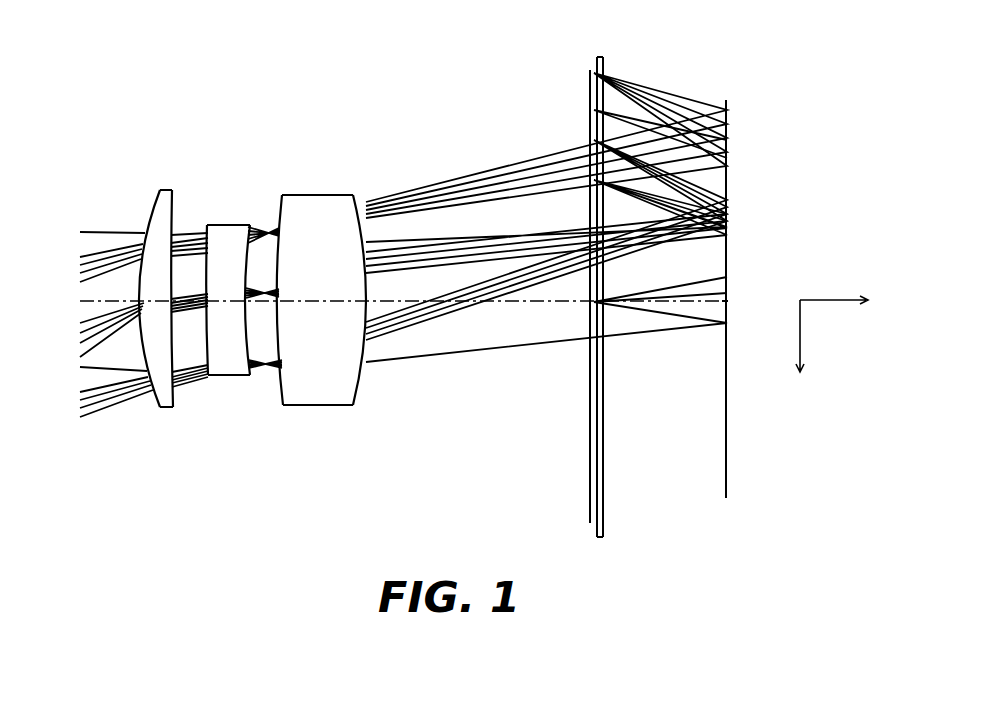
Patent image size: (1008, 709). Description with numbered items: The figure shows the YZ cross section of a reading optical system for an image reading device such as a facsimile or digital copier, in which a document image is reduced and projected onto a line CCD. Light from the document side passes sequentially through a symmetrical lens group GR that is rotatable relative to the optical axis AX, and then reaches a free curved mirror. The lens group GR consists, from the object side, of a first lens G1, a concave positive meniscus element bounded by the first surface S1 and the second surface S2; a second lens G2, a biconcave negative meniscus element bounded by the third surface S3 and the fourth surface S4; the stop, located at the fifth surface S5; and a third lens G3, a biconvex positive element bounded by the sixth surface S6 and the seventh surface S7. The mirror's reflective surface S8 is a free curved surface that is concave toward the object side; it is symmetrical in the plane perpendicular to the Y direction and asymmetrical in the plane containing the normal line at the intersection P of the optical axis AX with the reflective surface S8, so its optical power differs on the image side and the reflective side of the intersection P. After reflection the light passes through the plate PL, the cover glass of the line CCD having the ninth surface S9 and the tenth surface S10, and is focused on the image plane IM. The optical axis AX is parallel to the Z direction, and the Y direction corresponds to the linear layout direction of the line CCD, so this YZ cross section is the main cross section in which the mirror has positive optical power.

The first surface S1 is at (153, 207).
The second surface S2 is at (176, 208).
The third surface S3 is at (220, 247).
The fourth surface S4 is at (232, 247).
The fifth surface (stop) S5 is at (250, 247).
The sixth surface S6 is at (288, 213).
The seventh surface S7 is at (345, 225).
The reflective surface S8 is at (727, 147).
The ninth surface S9 is at (603, 60).
The tenth surface S10 is at (590, 62).
The first lens G1 is at (134, 289).
The second lens G2 is at (245, 259).
The third lens G3 is at (321, 289).
The lens group GR is at (372, 480).
The optical axis AX is at (545, 303).
The image plane IM is at (590, 497).
The plate PL is at (596, 272).
The intersection P is at (736, 300).
The Z direction Z is at (845, 300).
The Y direction Y is at (801, 354).